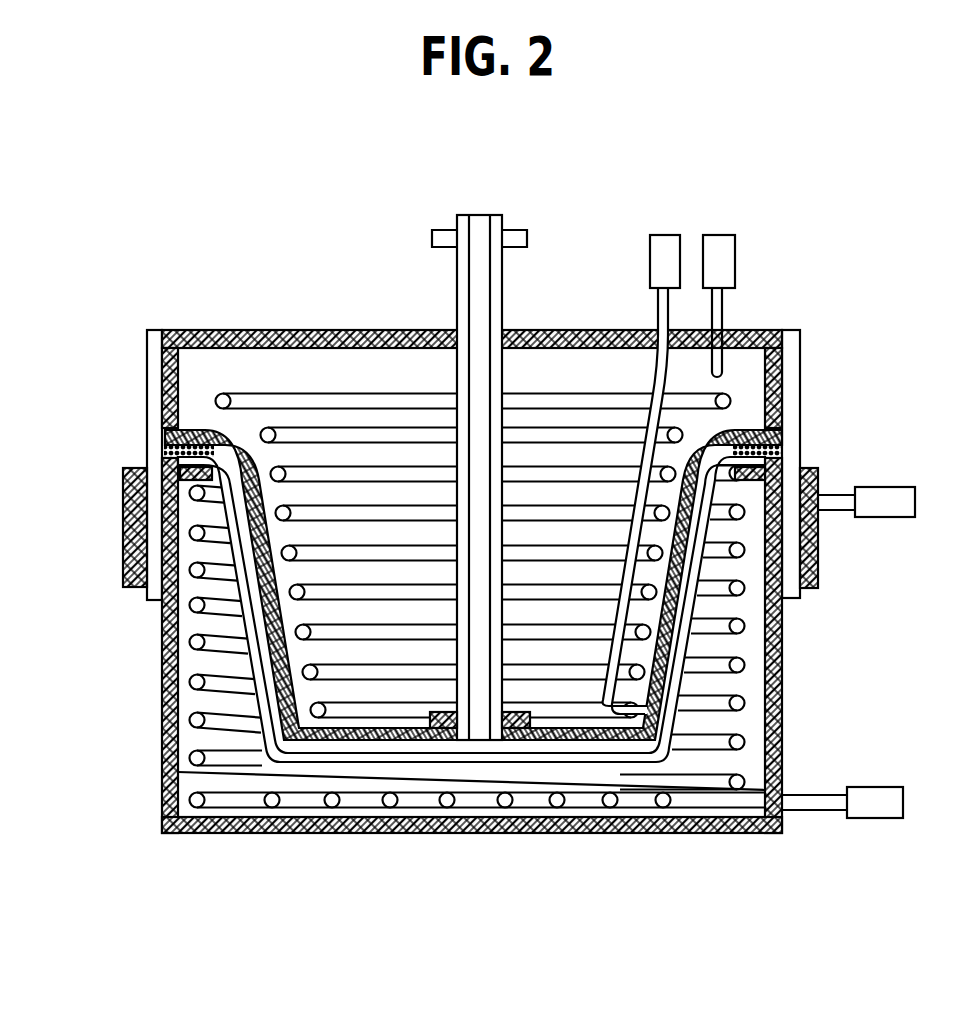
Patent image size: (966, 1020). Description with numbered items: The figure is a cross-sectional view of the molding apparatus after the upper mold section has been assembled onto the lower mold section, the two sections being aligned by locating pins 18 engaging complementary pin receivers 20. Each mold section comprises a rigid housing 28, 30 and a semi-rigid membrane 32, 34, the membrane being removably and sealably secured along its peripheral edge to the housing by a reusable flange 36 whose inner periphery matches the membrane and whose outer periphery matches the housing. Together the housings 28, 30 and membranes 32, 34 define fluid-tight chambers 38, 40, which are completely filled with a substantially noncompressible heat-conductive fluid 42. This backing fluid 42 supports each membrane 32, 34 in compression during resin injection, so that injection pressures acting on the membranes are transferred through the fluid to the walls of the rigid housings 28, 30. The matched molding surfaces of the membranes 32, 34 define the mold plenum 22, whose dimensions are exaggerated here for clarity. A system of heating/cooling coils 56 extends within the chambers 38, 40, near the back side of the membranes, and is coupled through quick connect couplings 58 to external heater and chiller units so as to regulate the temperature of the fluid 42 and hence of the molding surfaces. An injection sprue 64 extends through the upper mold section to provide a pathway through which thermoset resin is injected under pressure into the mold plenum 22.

The locating pins 18 is at (788, 597).
The complementary pin receivers 20 is at (806, 540).
The mold plenum 22 is at (268, 664).
The rigid housing 28 is at (189, 329).
The rigid housing 30 is at (159, 812).
The semi-rigid membrane 32 is at (670, 640).
The semi-rigid membrane 34 is at (695, 718).
The flange 36 is at (148, 443).
The fluid-tight chamber 38 is at (220, 382).
The fluid-tight chamber 40 is at (191, 751).
The heat-conductive fluid 42 is at (752, 378).
The heating/cooling coils 56 is at (390, 388).
The quick connect couplings 58 is at (661, 245).
The injection sprue 64 is at (515, 223).